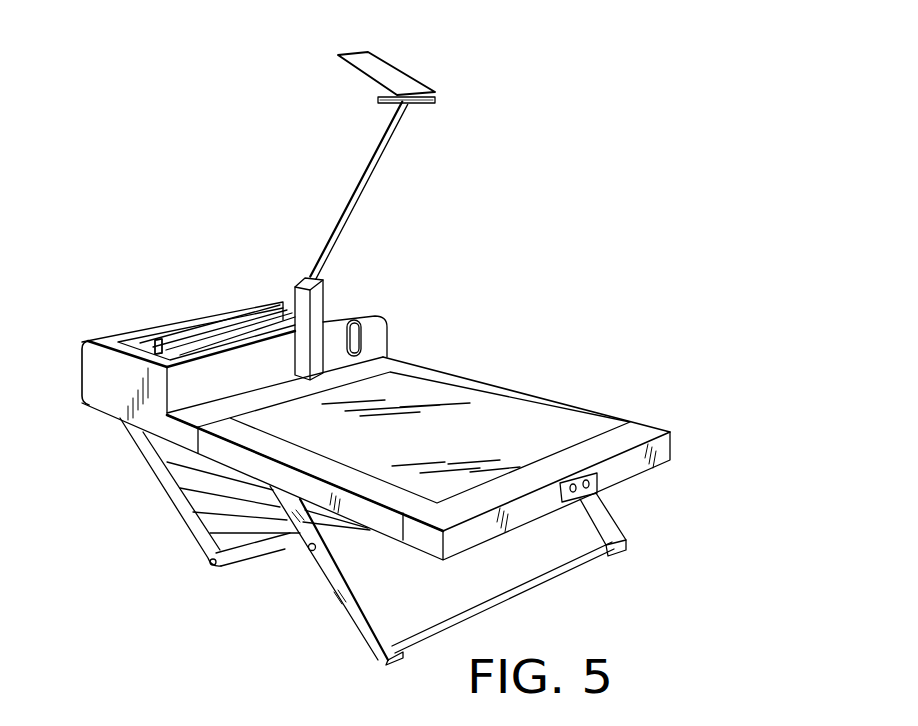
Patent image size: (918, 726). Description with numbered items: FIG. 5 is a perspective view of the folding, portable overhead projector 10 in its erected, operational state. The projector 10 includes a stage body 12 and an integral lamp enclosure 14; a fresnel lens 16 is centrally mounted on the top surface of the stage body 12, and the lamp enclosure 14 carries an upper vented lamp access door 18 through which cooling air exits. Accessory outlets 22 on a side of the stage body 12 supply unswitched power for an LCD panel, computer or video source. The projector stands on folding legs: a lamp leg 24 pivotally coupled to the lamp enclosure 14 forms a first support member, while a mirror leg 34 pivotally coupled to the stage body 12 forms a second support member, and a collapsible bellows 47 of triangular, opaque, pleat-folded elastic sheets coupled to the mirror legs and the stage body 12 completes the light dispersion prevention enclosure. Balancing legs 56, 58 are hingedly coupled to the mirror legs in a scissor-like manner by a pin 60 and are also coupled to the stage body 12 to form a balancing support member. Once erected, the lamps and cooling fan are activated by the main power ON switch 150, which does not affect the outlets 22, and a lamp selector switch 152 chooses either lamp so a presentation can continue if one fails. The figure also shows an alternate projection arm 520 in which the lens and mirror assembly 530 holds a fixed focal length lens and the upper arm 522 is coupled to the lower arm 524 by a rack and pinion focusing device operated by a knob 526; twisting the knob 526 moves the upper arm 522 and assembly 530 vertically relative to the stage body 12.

The overhead projector 10 is at (545, 300).
The stage body 12 is at (582, 417).
The lamp enclosure 14 is at (372, 316).
The fresnel lens 16 is at (442, 447).
The lamp access door 18 is at (210, 328).
The accessory outlets 22 is at (598, 493).
The lamp leg 24 is at (190, 533).
The mirror leg 34 is at (240, 560).
The collapsible bellows 47 is at (192, 480).
The balancing leg 56 is at (365, 632).
The balancing leg 58 is at (622, 522).
The pin 60 is at (309, 552).
The main power ON switch 150 is at (158, 343).
The lamp selector switch 152 is at (158, 346).
The projection arm 520 is at (413, 203).
The upper arm 522 is at (383, 158).
The lower arm 524 is at (297, 287).
The knob 526 is at (323, 337).
The lens and mirror assembly 530 is at (455, 77).